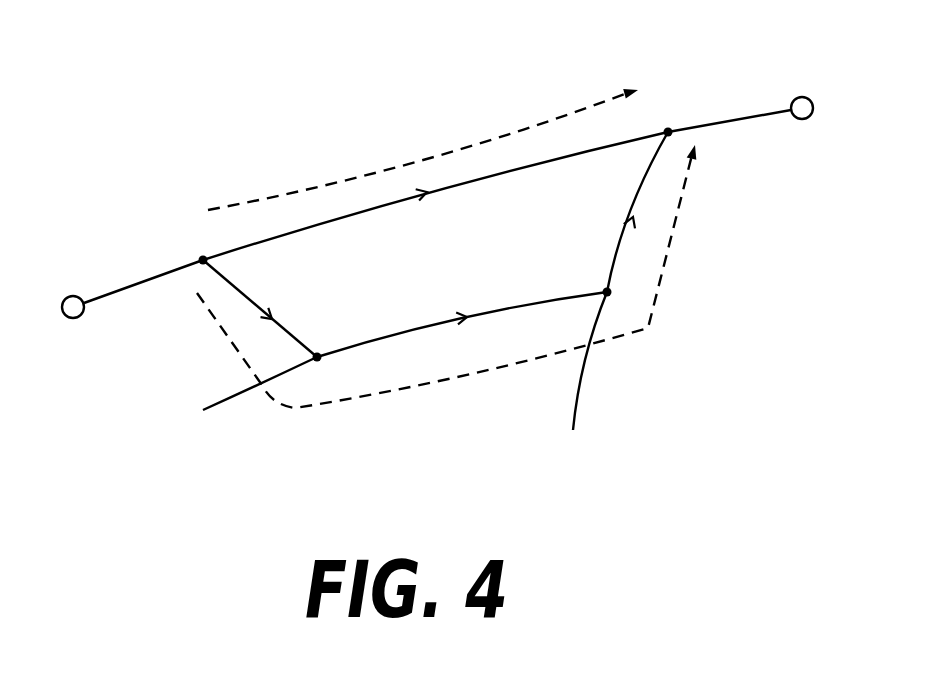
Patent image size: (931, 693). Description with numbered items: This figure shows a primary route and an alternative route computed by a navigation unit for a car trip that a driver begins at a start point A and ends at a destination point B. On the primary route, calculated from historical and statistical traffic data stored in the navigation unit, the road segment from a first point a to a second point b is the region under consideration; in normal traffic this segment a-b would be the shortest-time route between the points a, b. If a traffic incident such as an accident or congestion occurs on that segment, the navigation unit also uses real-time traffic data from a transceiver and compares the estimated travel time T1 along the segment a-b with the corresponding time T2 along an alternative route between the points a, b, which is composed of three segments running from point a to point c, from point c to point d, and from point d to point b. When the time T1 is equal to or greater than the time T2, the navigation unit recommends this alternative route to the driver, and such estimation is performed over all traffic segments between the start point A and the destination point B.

The start point A is at (56, 316).
The destination point B is at (818, 108).
The first point a is at (195, 242).
The second point b is at (668, 111).
The point c is at (320, 374).
The point d is at (618, 301).
The estimated travel time along segment a-b T1 is at (432, 140).
The corresponding time along alternative route T2 is at (477, 373).